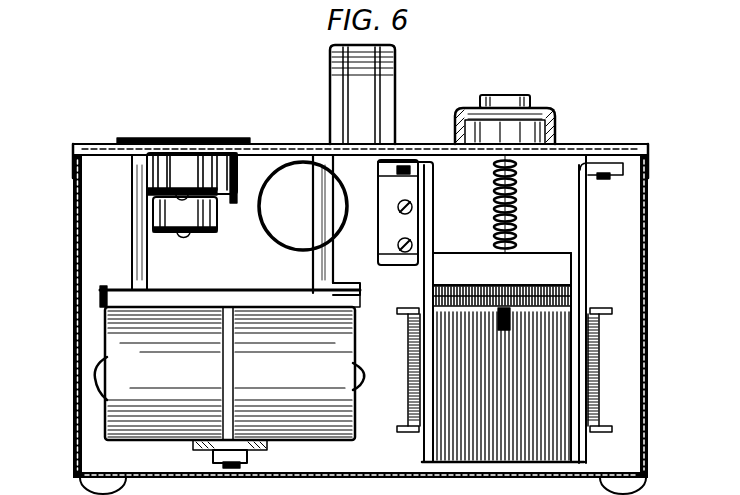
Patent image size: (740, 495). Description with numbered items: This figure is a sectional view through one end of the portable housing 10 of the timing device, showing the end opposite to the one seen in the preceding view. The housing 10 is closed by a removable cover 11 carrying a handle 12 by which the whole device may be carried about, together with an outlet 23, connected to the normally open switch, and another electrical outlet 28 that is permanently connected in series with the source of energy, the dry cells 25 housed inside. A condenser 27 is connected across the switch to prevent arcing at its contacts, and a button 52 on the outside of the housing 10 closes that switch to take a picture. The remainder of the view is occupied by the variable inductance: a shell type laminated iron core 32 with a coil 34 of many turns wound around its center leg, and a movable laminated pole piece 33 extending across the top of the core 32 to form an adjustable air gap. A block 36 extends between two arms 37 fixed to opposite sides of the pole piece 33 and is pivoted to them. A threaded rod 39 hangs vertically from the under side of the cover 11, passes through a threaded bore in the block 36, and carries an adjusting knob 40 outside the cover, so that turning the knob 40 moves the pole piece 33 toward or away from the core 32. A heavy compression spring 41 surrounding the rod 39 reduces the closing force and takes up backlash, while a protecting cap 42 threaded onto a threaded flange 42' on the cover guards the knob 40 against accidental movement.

The portable housing 10 is at (650, 327).
The removable cover 11 is at (651, 173).
The handle 12 is at (330, 58).
The outlet 23 is at (256, 144).
The dry cells 25 is at (230, 387).
The condenser 27 is at (283, 238).
The electrical outlet 28 is at (190, 139).
The laminated iron core 32 is at (452, 440).
The movable pole piece 33 is at (574, 295).
The coil 34 is at (405, 353).
The block 36 is at (538, 265).
The arms 37 is at (437, 254).
The threaded rod 39 is at (494, 189).
The adjusting knob 40 is at (549, 109).
The compression spring 41 is at (518, 186).
The protecting cap 42 is at (442, 114).
The threaded flange 42' is at (583, 127).
The button 52 is at (499, 97).